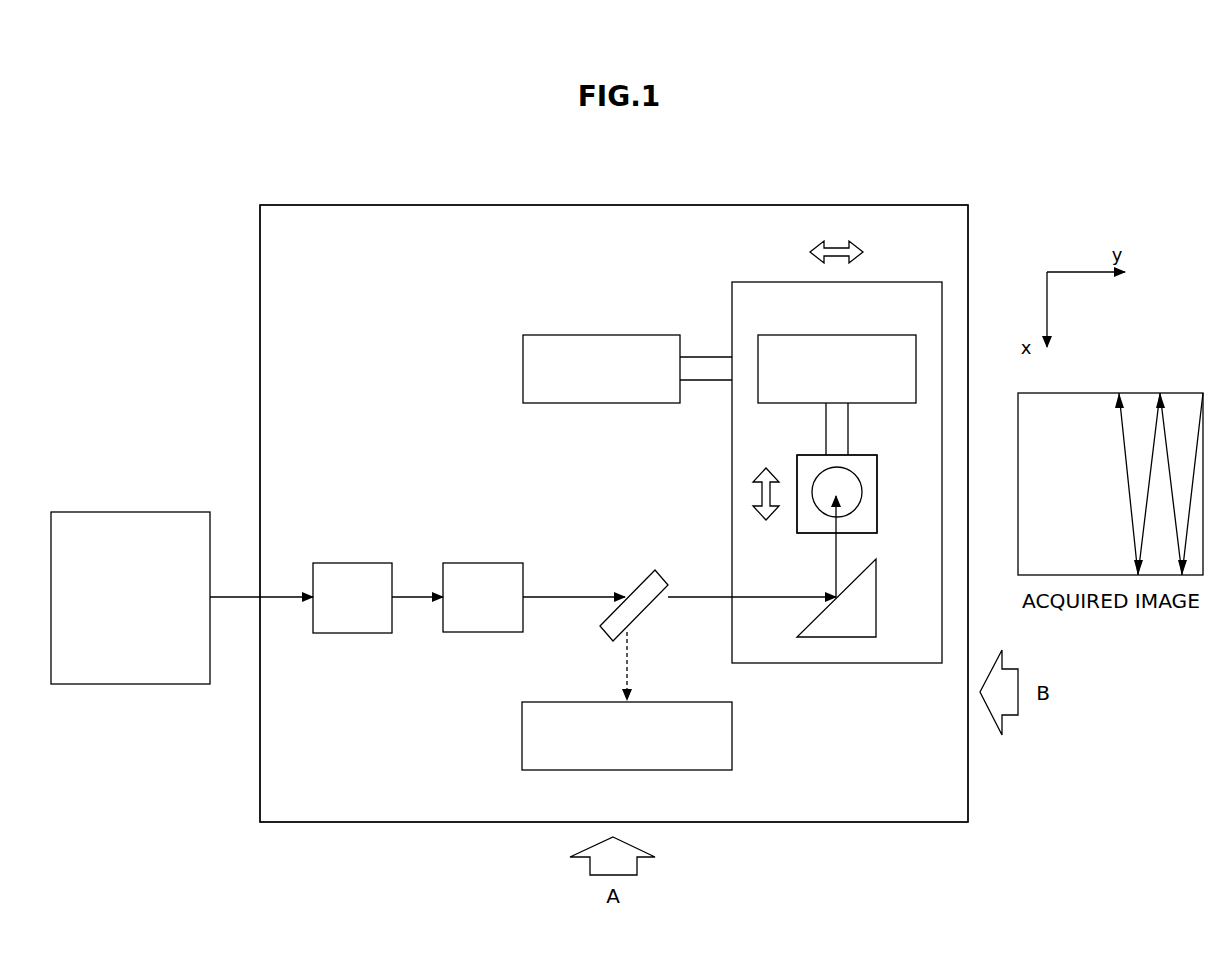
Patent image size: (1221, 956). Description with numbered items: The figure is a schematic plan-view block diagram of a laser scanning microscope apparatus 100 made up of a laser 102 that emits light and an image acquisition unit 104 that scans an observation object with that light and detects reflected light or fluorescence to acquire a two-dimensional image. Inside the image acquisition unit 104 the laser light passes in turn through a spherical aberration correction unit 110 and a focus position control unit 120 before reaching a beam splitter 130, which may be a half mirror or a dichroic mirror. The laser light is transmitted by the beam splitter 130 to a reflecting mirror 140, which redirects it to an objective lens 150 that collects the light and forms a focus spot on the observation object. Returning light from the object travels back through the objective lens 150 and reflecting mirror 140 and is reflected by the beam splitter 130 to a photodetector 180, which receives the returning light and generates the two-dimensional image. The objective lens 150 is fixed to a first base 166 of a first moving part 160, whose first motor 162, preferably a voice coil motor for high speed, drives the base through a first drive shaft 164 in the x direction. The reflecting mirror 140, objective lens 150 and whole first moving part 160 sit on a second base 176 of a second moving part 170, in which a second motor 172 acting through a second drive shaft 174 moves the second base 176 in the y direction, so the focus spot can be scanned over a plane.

The laser scanning microscope apparatus 100 is at (911, 137).
The laser 102 is at (162, 511).
The image acquisition unit 104 is at (737, 204).
The spherical aberration correction unit 110 is at (363, 562).
The focus position control unit 120 is at (494, 562).
The beam splitter 130 is at (636, 589).
The reflecting mirror 140 is at (878, 597).
The objective lens 150 is at (850, 478).
The first moving part 160 is at (818, 430).
The first motor 162 is at (868, 334).
The first drive shaft 164 is at (850, 430).
The first base 166 is at (878, 510).
The second moving part 170 is at (706, 274).
The second motor 172 is at (634, 334).
The second drive shaft 174 is at (693, 356).
The second base 176 is at (898, 281).
The photodetector 180 is at (659, 701).